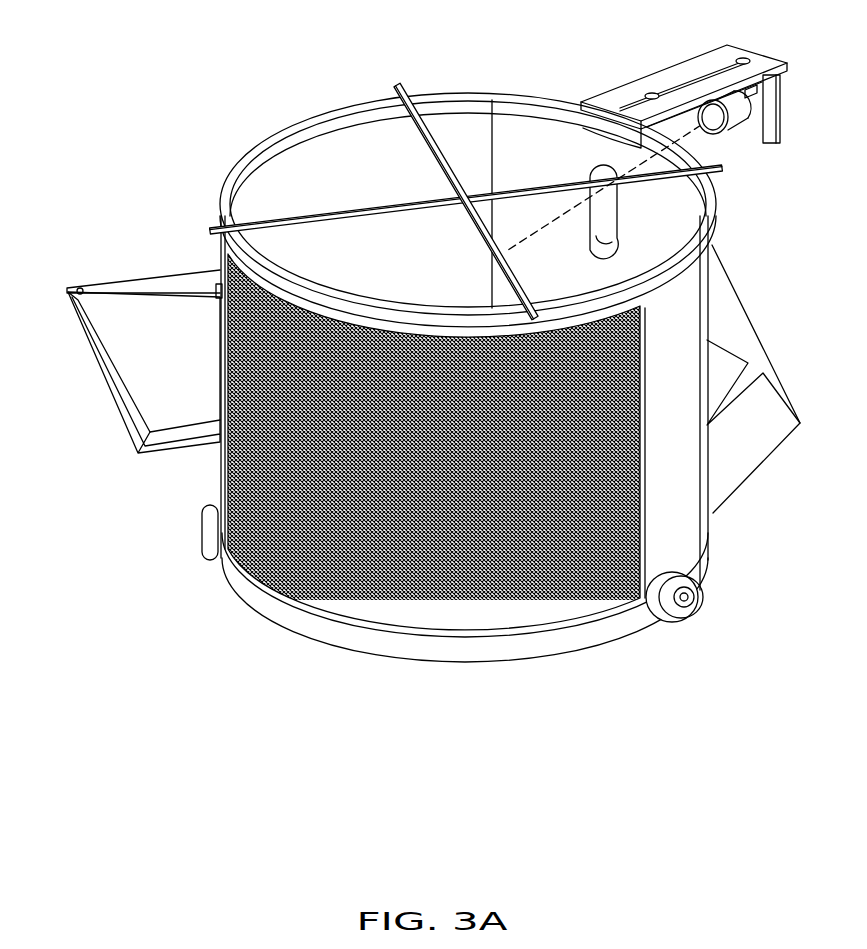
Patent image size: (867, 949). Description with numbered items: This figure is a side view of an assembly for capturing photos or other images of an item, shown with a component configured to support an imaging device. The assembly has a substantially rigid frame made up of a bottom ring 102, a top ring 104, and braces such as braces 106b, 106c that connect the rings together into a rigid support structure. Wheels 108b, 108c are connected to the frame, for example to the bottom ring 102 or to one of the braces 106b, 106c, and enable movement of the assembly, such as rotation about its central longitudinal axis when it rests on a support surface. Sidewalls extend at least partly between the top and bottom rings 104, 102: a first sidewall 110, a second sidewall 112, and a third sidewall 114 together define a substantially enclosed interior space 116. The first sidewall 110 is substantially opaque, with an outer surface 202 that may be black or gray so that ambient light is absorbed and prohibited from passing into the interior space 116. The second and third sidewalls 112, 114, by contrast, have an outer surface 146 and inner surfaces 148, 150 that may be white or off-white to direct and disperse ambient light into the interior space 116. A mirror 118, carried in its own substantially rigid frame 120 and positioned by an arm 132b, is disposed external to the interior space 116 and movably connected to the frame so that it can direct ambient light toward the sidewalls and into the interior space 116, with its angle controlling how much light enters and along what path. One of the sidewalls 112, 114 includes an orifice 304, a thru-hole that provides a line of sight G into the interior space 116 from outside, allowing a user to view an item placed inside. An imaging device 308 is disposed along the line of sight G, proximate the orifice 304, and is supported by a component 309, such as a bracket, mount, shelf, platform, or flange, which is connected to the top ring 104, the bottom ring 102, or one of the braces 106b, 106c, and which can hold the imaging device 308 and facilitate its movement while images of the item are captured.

The bottom ring 102 is at (412, 648).
The top ring 104 is at (707, 240).
The brace 106b is at (672, 523).
The brace 106c is at (220, 463).
The wheel 108b is at (692, 617).
The wheel 108c is at (202, 530).
The first sidewall 110 is at (380, 475).
The second sidewall 112 is at (380, 278).
The third sidewall 114 is at (520, 166).
The interior space 116 is at (310, 183).
The mirror 118 is at (105, 407).
The frame 120 is at (85, 353).
The arm 132b is at (160, 292).
The outer surface 146 is at (700, 457).
The inner surface 148 is at (347, 134).
The inner surface 150 is at (520, 107).
The outer surface 202 is at (580, 568).
The orifice 304 is at (613, 233).
The imaging device 308 is at (740, 115).
The component 309 is at (682, 76).
The line of sight G is at (543, 227).